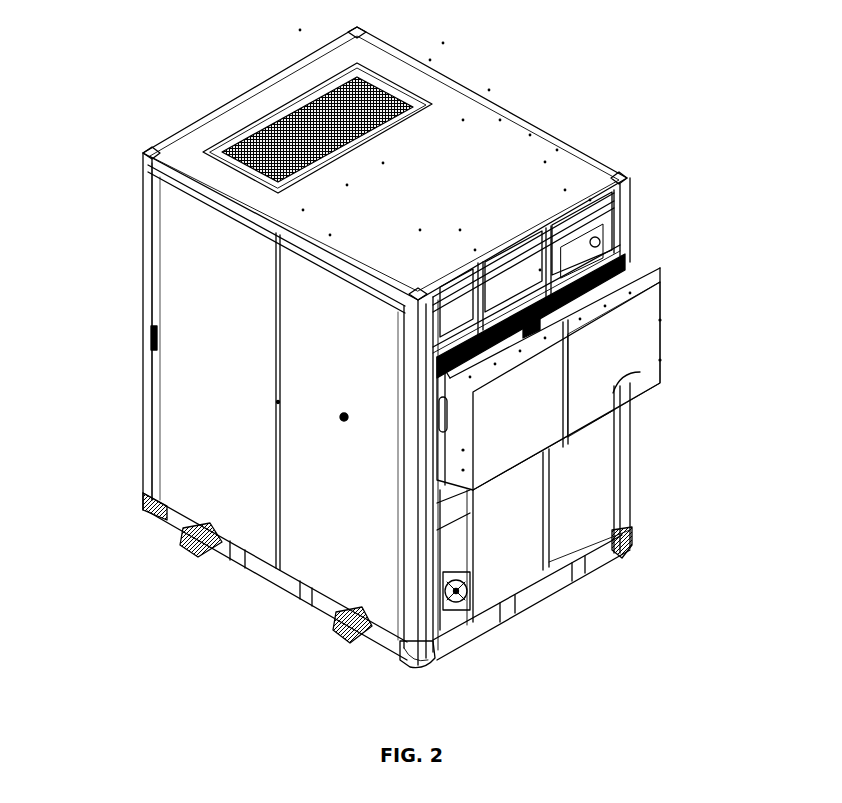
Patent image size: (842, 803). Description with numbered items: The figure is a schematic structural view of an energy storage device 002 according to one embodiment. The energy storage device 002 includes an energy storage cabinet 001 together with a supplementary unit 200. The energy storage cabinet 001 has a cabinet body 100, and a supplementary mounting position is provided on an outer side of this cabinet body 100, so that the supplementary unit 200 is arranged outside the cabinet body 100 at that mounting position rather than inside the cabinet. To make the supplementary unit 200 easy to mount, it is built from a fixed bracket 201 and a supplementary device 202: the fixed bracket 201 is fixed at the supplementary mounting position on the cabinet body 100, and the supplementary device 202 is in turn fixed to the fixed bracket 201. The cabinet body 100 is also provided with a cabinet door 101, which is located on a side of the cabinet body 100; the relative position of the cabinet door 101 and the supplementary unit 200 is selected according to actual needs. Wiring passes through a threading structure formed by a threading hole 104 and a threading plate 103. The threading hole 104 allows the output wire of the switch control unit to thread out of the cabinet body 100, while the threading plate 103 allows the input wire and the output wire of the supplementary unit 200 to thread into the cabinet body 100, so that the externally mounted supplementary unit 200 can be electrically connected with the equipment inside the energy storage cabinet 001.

The energy storage cabinet 001 is at (126, 190).
The energy storage device 002 is at (208, 75).
The cabinet body 100 is at (176, 286).
The cabinet door 101 is at (195, 412).
The threading plate 103 is at (437, 591).
The threading hole 104 is at (478, 605).
The supplementary unit 200 is at (618, 327).
The fixed bracket 201 is at (632, 244).
The supplementary device 202 is at (618, 380).